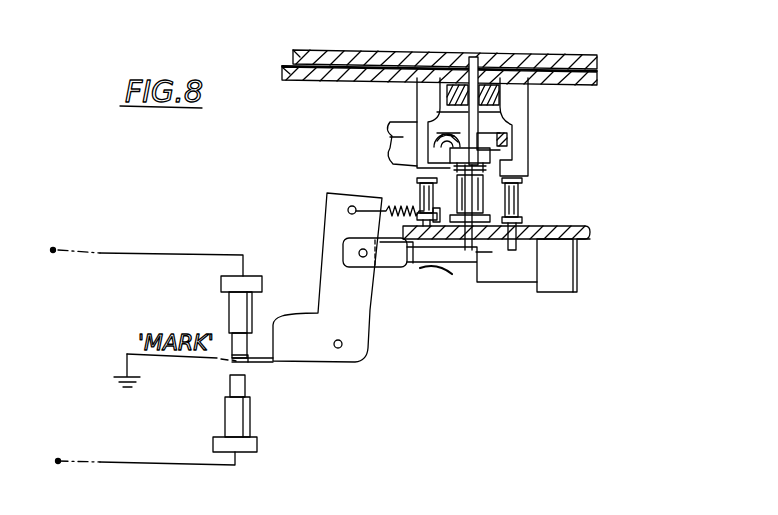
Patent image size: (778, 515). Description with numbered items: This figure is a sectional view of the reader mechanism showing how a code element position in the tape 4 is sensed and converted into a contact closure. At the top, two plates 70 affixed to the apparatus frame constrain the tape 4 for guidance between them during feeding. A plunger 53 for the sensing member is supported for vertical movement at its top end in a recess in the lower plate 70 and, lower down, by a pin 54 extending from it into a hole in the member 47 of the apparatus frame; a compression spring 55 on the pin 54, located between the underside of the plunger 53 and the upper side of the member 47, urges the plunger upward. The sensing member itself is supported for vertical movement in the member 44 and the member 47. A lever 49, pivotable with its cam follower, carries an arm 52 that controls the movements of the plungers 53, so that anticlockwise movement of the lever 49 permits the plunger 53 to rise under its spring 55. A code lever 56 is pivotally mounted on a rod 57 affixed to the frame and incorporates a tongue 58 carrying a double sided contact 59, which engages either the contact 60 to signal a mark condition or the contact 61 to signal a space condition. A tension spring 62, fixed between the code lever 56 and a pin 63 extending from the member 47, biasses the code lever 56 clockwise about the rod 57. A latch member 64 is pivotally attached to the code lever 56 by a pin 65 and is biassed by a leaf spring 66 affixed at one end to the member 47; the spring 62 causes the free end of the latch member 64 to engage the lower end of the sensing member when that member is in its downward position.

The tape 4 is at (598, 74).
The member 44 is at (491, 102).
The member 47 is at (488, 240).
The lever 49 is at (404, 136).
The arm 52 is at (502, 142).
The plunger 53 is at (529, 117).
The pin 54 is at (460, 218).
The compression spring 55 is at (522, 188).
The code lever 56 is at (333, 201).
The rod 57 is at (341, 348).
The tongue 58 is at (252, 360).
The double sided contact 59 is at (245, 361).
The contact 60 is at (237, 356).
The contact 61 is at (230, 377).
The tension spring 62 is at (346, 218).
The pin 63 is at (445, 243).
The latch member 64 is at (387, 265).
The pin 65 is at (358, 252).
The leaf spring 66 is at (480, 253).
The plate 70 is at (297, 67).